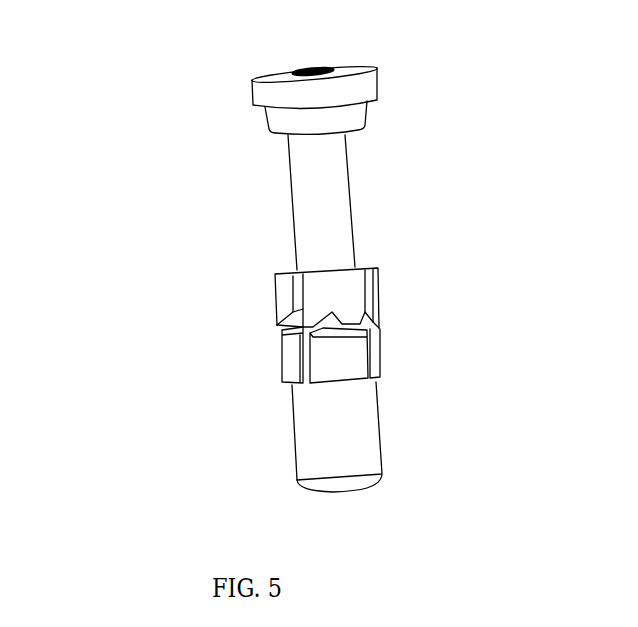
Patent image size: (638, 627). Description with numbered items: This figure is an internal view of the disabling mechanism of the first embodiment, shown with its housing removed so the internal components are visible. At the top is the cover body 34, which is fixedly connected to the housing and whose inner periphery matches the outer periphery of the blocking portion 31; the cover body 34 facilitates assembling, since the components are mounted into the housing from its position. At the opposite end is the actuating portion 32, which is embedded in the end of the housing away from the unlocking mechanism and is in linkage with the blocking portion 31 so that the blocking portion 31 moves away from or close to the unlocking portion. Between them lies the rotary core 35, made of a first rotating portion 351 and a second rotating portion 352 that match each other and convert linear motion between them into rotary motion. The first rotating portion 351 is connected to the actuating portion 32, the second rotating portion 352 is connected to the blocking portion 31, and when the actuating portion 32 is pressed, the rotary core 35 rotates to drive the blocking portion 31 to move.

The blocking portion 31 is at (318, 71).
The actuating portion 32 is at (300, 483).
The cover body 34 is at (295, 98).
The rotary core 35 is at (216, 326).
The first rotating portion 351 is at (313, 304).
The second rotating portion 352 is at (313, 364).